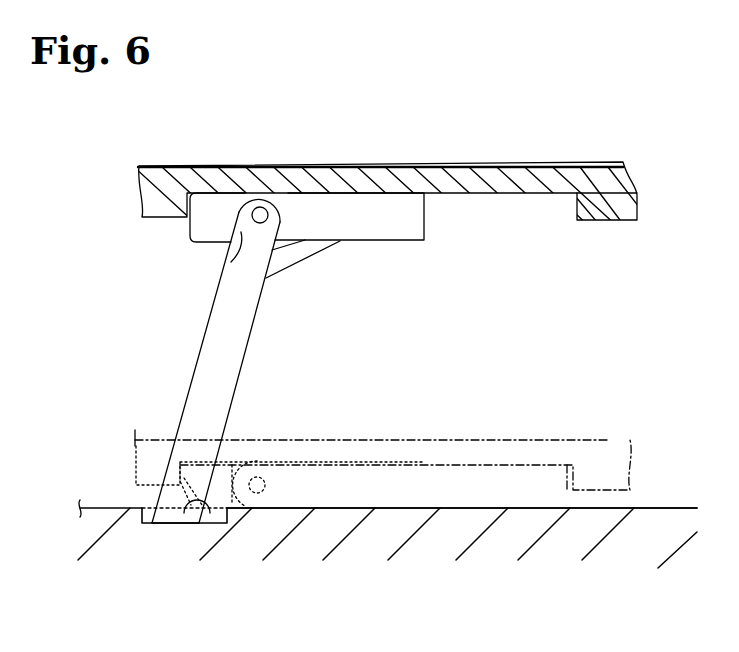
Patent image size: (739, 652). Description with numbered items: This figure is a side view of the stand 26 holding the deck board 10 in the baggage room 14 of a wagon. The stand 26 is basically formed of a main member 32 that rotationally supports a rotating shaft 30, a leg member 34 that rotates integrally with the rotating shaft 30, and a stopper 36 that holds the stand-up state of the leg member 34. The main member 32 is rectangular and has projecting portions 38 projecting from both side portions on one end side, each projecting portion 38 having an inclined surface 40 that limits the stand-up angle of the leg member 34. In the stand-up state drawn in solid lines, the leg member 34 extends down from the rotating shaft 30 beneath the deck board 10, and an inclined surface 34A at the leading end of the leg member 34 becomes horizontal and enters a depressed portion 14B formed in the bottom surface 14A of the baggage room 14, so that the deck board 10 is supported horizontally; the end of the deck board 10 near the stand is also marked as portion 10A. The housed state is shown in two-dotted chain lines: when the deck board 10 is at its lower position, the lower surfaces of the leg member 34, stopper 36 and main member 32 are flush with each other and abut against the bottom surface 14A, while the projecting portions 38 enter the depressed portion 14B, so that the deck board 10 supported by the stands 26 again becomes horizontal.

The deck board 10 is at (544, 180).
The plate flange 10A is at (608, 222).
The baggage room 14 is at (677, 520).
The bottom surface 14A is at (480, 508).
The depressed portion 14B is at (185, 524).
The stand 26 is at (369, 264).
The rotating shaft 30 is at (260, 207).
The main member 32 is at (424, 198).
The leg member 34 is at (208, 338).
The inclined surface 34A is at (165, 528).
The stopper 36 is at (302, 257).
The projecting portion 38 is at (190, 226).
The inclined surface 40 is at (231, 262).